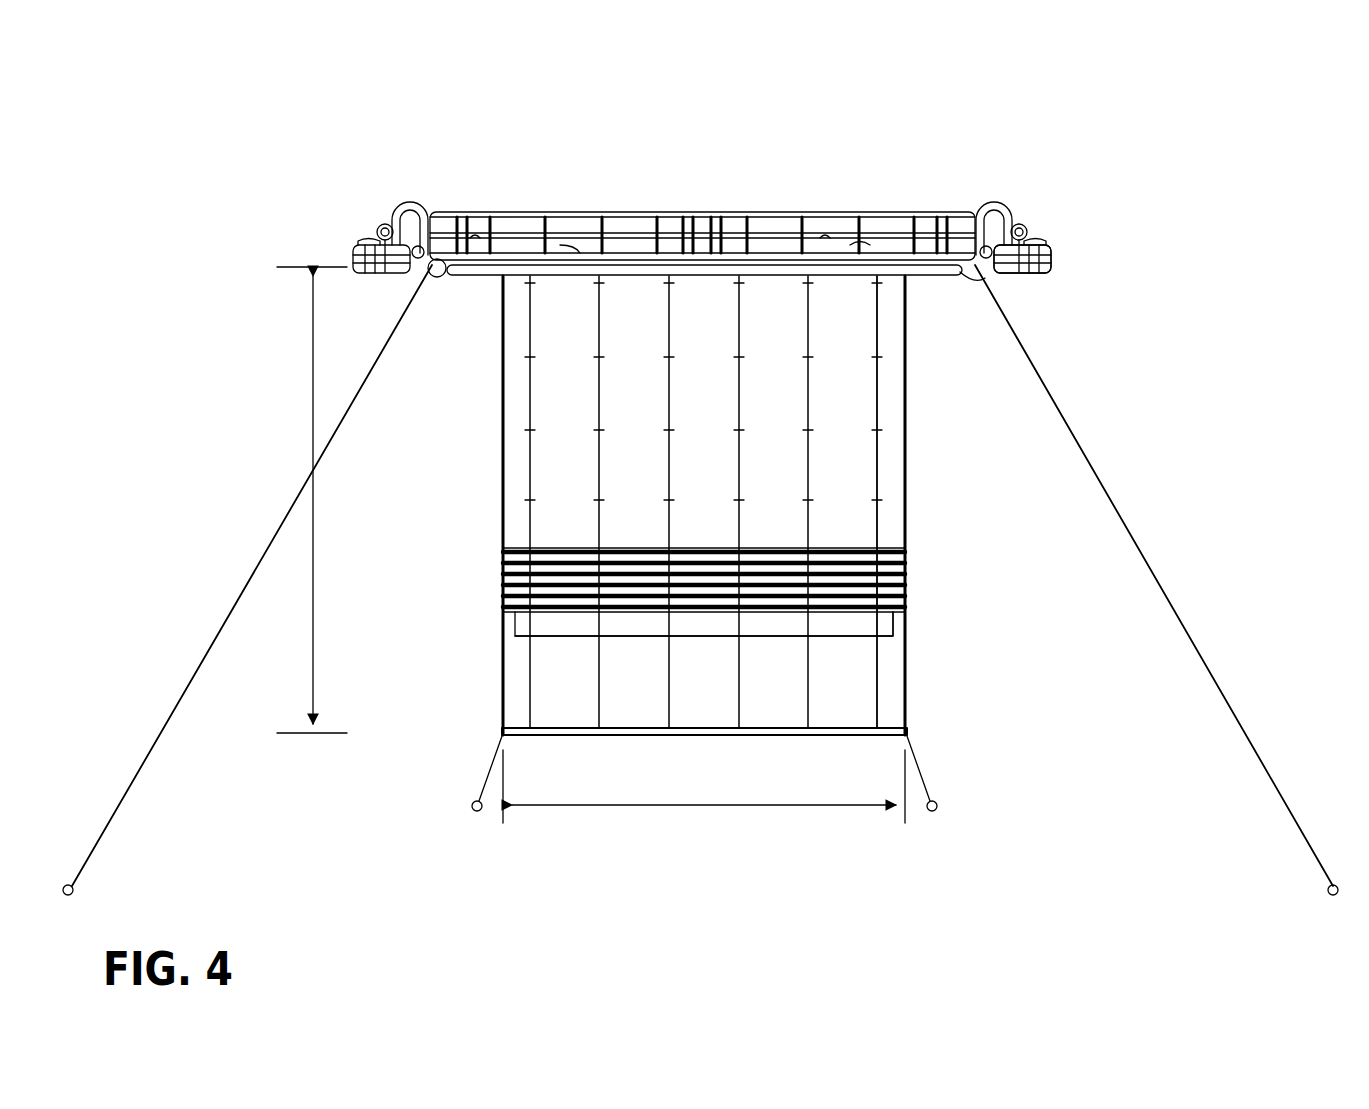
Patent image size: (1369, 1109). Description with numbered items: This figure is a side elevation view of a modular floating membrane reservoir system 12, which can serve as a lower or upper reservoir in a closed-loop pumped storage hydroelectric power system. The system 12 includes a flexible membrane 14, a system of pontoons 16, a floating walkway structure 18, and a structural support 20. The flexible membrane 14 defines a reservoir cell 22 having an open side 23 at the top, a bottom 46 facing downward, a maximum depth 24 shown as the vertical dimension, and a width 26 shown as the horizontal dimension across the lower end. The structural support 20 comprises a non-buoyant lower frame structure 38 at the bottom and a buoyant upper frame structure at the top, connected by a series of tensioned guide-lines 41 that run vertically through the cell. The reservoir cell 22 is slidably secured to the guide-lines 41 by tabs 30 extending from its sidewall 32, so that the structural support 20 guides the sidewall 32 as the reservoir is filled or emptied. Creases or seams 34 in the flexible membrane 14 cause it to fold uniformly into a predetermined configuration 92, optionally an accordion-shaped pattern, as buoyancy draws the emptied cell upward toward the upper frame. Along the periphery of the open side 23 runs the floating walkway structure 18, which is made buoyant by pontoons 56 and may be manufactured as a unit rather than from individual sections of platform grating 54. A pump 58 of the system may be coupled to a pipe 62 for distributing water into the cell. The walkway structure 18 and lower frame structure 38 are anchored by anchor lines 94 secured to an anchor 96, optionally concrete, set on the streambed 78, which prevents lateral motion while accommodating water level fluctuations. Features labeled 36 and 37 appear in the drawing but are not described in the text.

The modular floating membrane reservoir system 12 is at (511, 155).
The flexible membrane 14 is at (887, 358).
The system of pontoons 16 is at (1062, 262).
The floating walkway structure 18 is at (945, 202).
The structural support 20 is at (731, 573).
The reservoir cell 22 is at (905, 530).
The open side 23 is at (835, 200).
The maximum depth 24 is at (313, 380).
The width 26 is at (725, 807).
The tabs 30 is at (885, 425).
The sidewall 32 is at (688, 382).
The creases or seams 34 is at (503, 587).
The side edge 36 is at (503, 370).
The bottom loop 37 is at (855, 640).
The lower frame structure 38 is at (503, 735).
The guide-lines 41 is at (807, 352).
The bottom 46 is at (560, 640).
The platform grating 54 is at (800, 210).
The pontoons 56 is at (962, 278).
The pump 58 is at (385, 224).
The pipe 62 is at (993, 212).
The streambed 78 is at (310, 864).
The predetermined configuration 92 is at (957, 580).
The anchor lines 94 is at (185, 690).
The anchor 96 is at (75, 888).